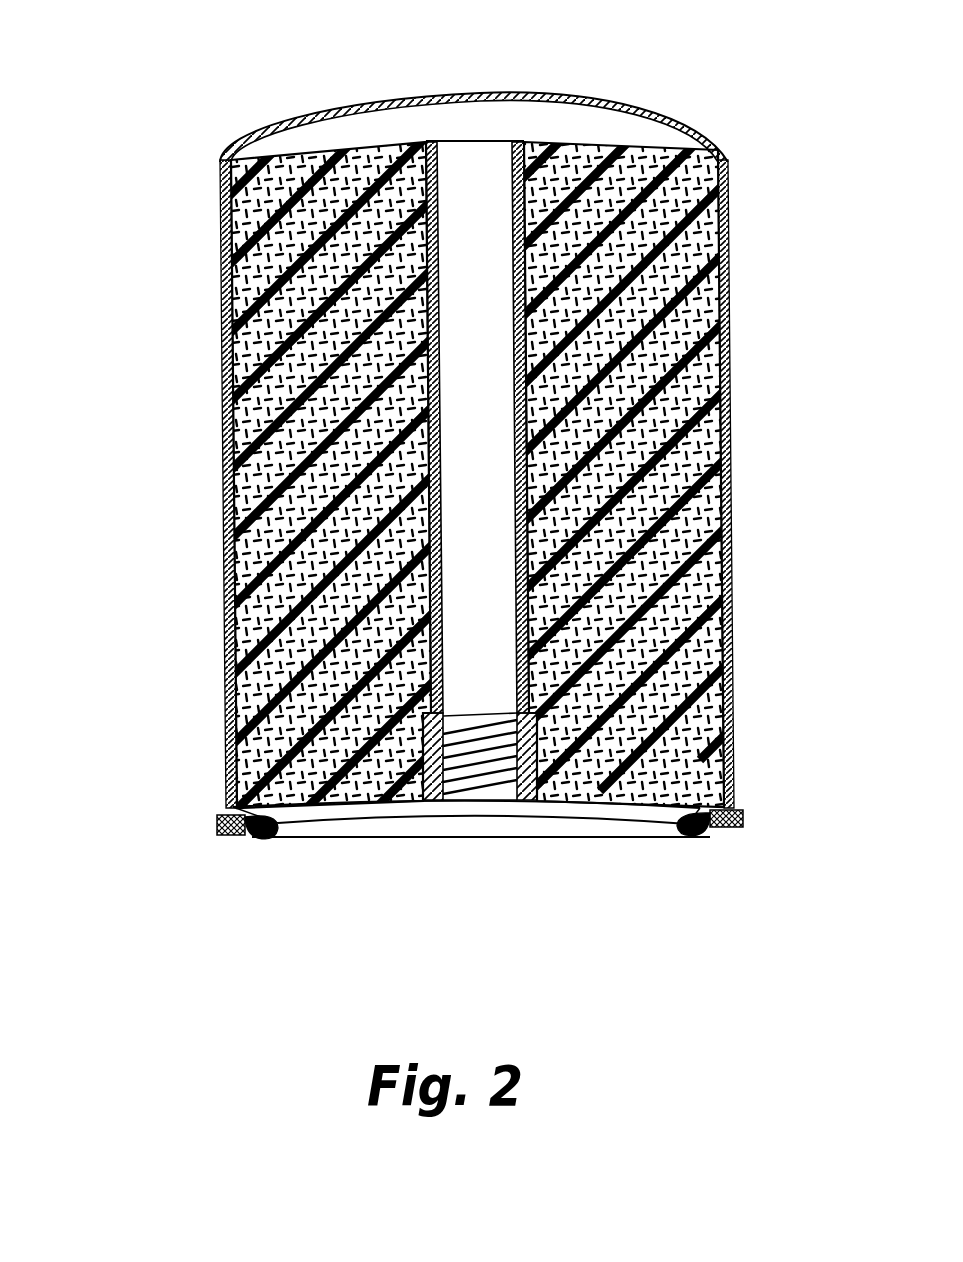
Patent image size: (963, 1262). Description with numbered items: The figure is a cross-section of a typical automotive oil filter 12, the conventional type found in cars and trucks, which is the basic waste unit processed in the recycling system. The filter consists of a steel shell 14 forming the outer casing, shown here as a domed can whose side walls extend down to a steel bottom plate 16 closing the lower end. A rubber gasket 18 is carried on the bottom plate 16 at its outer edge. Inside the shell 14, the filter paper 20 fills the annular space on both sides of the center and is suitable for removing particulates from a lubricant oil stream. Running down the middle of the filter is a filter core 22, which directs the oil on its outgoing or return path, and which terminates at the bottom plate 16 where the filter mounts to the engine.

The oil filter 12 is at (481, 488).
The steel shell 14 is at (227, 445).
The steel bottom plate 16 is at (360, 828).
The rubber gasket 18 is at (280, 835).
The filter paper 20 is at (337, 602).
The filter core 22 is at (530, 410).